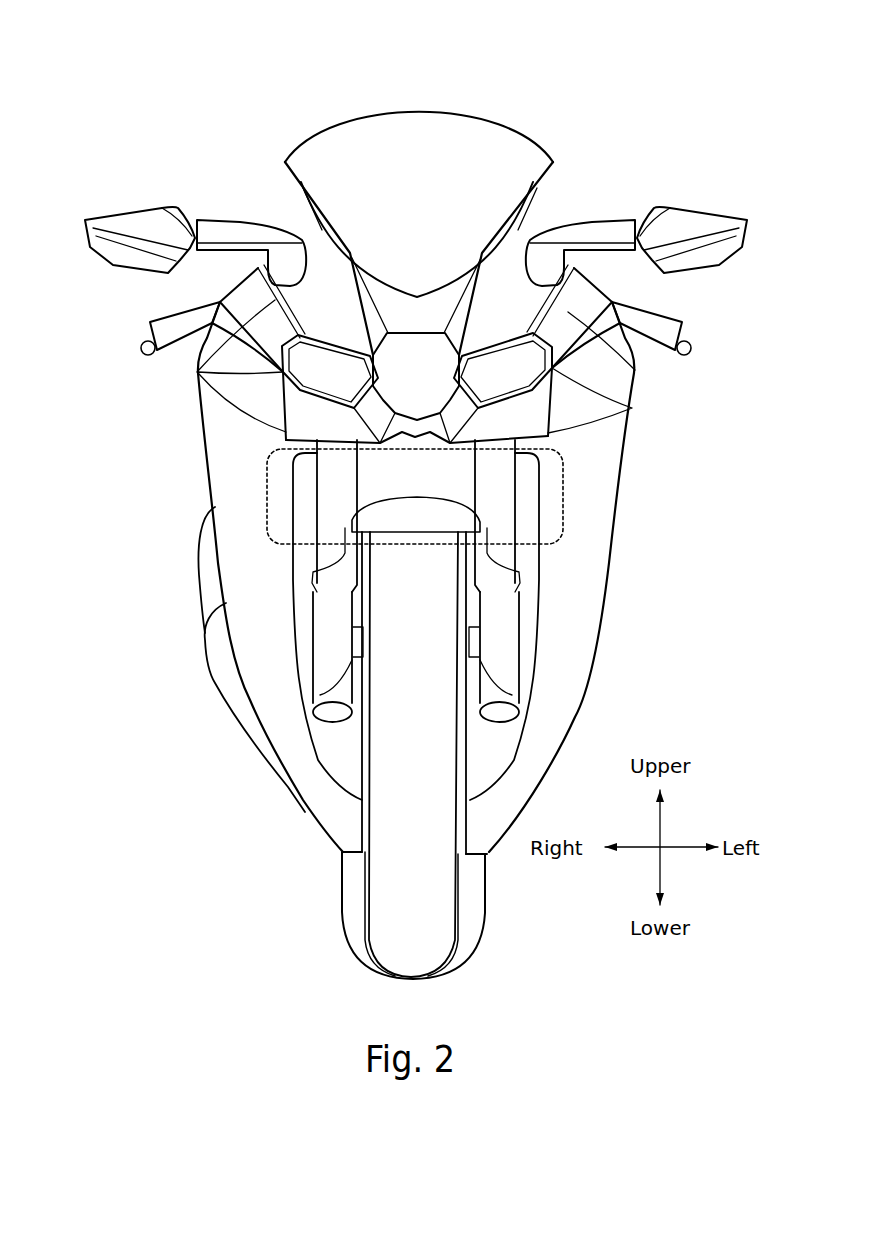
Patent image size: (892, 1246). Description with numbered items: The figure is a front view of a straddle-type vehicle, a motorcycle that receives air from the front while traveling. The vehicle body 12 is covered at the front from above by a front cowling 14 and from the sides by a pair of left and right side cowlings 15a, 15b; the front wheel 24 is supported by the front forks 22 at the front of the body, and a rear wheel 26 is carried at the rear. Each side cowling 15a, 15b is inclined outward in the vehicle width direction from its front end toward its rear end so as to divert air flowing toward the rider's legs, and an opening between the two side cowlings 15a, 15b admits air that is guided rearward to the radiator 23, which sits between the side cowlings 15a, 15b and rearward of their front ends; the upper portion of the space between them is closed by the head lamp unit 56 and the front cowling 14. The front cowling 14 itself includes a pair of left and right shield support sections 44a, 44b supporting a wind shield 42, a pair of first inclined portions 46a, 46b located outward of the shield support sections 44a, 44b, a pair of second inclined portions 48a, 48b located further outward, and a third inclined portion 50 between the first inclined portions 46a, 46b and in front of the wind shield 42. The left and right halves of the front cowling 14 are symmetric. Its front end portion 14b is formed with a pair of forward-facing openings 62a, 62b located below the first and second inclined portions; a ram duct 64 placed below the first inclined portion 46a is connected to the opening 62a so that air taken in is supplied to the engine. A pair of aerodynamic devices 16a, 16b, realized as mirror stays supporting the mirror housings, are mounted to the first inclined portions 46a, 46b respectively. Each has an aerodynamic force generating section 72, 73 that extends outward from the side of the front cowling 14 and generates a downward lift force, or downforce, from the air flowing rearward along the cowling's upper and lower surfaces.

The vehicle body 12 is at (335, 487).
The front cowling 14 is at (614, 293).
The front end portion of the front cowling 14b is at (632, 408).
The left side cowling 15a is at (625, 470).
The right side cowling 15b is at (213, 470).
The aerodynamic device 16a is at (711, 205).
The aerodynamic device 16b is at (122, 206).
The front forks 22 is at (308, 630).
The radiator 23 is at (267, 527).
The front wheel 24 is at (397, 888).
The rear wheel 26 is at (357, 932).
The wind shield 42 is at (468, 150).
The shield support section 44a is at (510, 230).
The shield support section 44b is at (322, 230).
The first inclined portion 46a is at (508, 333).
The first inclined portion 46b is at (350, 335).
The second inclined portion 48a is at (636, 372).
The second inclined portion 48b is at (196, 371).
The third inclined portion 50 is at (413, 313).
The head lamp unit 56 is at (268, 408).
The opening 62a is at (490, 335).
The opening 62b is at (282, 427).
The ram duct 64 is at (497, 375).
The aerodynamic force generating section 72 is at (606, 235).
The aerodynamic force generating section 73 is at (222, 228).